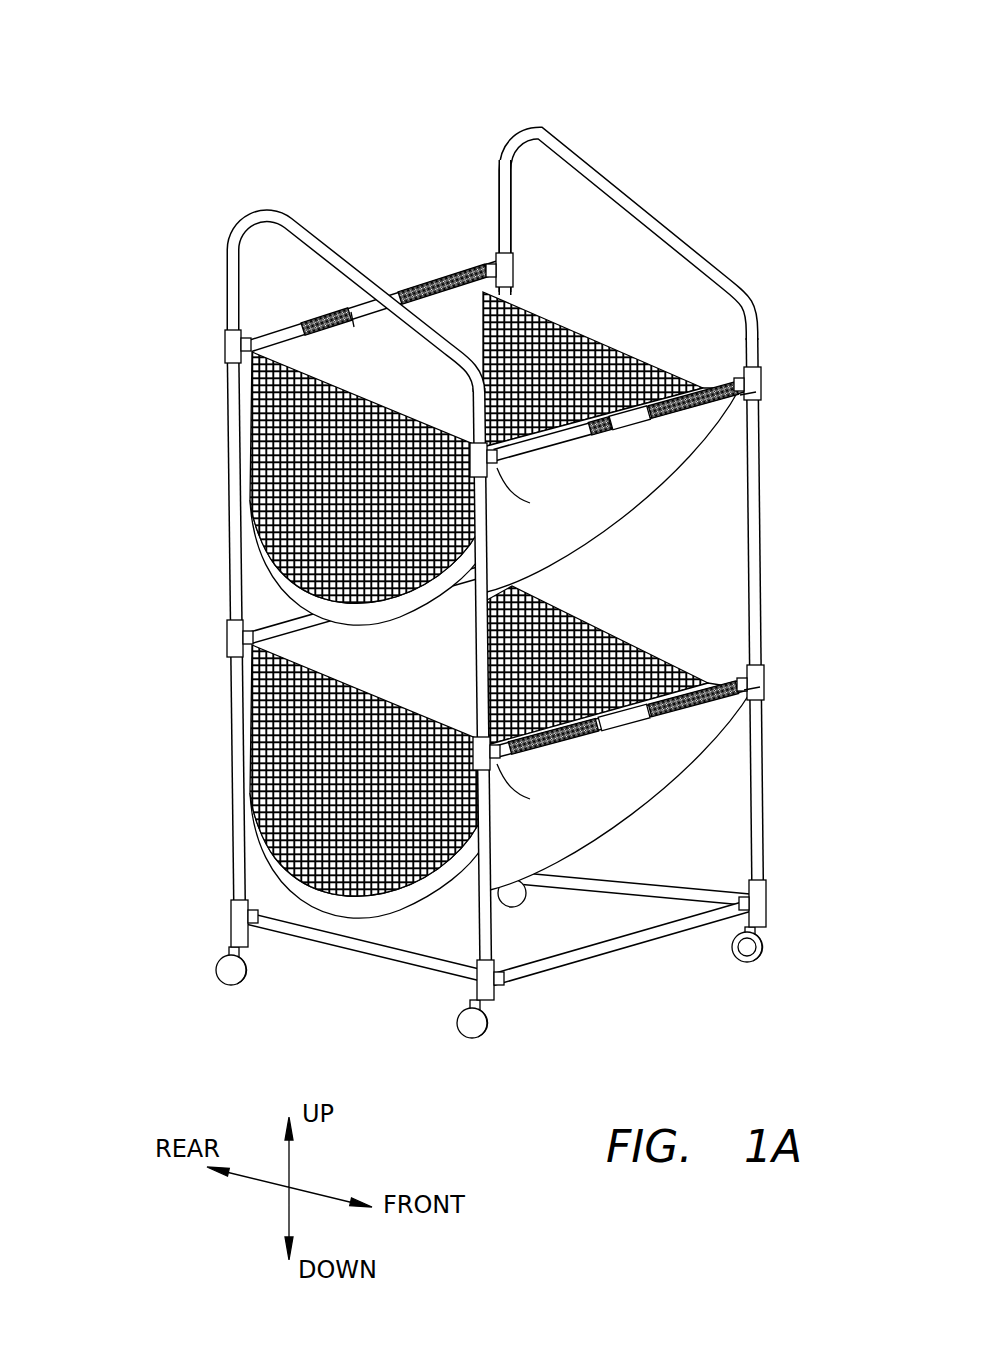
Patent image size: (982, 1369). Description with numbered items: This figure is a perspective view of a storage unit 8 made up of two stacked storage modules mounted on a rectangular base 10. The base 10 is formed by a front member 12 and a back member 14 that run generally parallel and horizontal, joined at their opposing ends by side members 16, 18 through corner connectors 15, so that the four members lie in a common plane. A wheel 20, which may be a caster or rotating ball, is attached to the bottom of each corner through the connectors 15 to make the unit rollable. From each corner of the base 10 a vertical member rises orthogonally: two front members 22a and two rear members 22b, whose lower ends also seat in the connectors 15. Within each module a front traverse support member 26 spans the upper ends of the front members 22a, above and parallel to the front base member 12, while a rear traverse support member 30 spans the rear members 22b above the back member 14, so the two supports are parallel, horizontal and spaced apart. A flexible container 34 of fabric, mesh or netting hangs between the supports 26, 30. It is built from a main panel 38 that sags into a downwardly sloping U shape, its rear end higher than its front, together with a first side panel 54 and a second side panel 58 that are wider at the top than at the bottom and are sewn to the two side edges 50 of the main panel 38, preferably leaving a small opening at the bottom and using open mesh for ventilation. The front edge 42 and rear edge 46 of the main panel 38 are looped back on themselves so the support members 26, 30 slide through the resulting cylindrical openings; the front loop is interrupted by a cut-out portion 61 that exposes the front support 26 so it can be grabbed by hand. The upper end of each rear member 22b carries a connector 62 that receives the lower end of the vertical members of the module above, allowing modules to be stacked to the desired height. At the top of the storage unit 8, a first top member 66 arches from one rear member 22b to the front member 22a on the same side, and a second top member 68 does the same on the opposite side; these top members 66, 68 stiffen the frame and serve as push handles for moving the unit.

The storage unit 8 is at (683, 38).
The rectangular base 10 is at (703, 872).
The front member 12 is at (588, 950).
The back member 14 is at (283, 903).
The connector 15 is at (237, 919).
The side member 16 is at (348, 950).
The side member 18 is at (636, 871).
The wheel 20 is at (768, 951).
The front vertical member 22a is at (763, 574).
The rear vertical member 22b is at (518, 294).
The front traverse support member 26 is at (615, 440).
The rear traverse support member 30 is at (364, 312).
The container 34 is at (696, 447).
The main panel 38 is at (709, 529).
The front edge 42 is at (748, 429).
The rear edge 46 is at (471, 285).
The side edge 50 is at (266, 531).
The first side panel 54 is at (298, 446).
The second side panel 58 is at (547, 333).
The cut-out portion 61 is at (641, 422).
The connector 62 is at (763, 377).
The first top member 66 is at (270, 207).
The second top member 68 is at (584, 151).